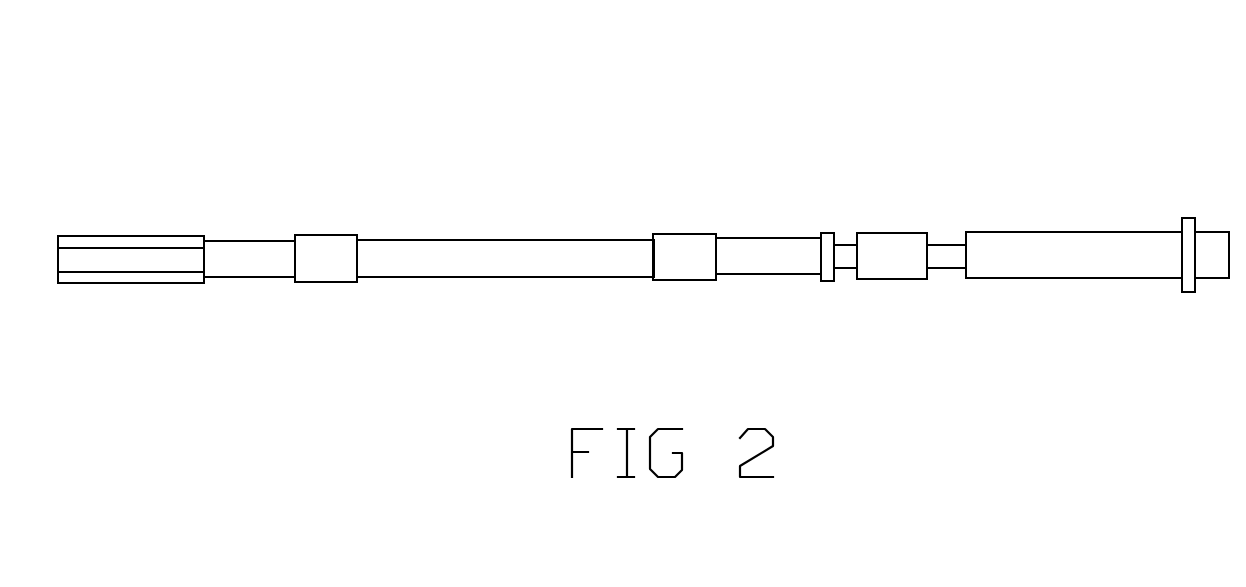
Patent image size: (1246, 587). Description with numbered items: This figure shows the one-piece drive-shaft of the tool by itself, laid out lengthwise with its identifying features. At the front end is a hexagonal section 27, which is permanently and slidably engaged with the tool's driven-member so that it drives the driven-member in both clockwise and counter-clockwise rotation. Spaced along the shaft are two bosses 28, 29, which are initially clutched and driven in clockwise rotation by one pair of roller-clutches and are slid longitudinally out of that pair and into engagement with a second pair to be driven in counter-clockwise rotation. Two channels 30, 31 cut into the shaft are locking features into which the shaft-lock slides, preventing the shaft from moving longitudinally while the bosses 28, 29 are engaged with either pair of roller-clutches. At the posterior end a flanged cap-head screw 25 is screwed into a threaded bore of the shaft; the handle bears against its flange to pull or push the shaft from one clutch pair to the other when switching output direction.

The flanged cap-head screw 25 is at (1212, 250).
The hexagonal section 27 is at (118, 258).
The boss 28 is at (325, 257).
The boss 29 is at (680, 258).
The channel 30 is at (848, 255).
The channel 31 is at (945, 253).